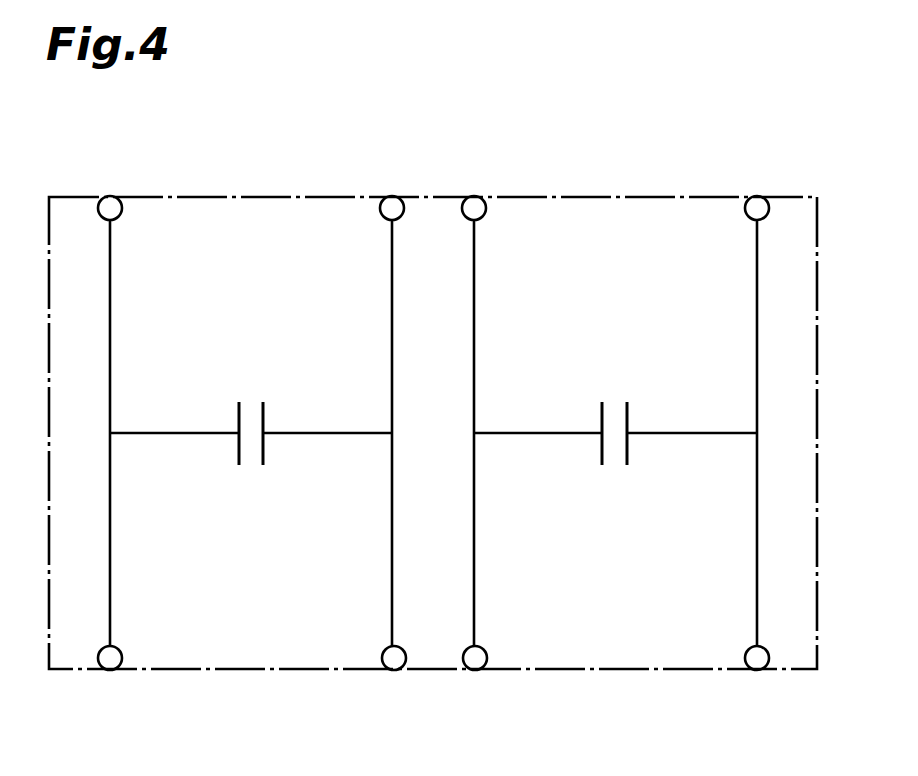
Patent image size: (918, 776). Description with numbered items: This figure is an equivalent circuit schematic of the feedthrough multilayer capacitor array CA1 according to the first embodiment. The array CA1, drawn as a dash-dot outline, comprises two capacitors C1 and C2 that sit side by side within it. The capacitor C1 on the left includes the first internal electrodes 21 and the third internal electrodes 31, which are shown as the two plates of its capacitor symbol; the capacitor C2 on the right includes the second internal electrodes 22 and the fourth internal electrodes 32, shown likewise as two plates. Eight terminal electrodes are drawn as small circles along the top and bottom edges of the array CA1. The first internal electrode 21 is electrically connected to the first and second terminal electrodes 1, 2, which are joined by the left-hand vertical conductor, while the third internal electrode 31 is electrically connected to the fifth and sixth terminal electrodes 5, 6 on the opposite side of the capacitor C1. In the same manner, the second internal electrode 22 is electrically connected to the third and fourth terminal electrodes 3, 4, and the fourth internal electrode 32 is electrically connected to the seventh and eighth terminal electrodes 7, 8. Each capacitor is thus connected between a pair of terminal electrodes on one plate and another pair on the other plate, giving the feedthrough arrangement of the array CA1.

The first terminal electrode 1 is at (110, 672).
The second terminal electrode 2 is at (110, 194).
The third terminal electrode 3 is at (475, 672).
The fourth terminal electrode 4 is at (474, 194).
The fifth terminal electrode 5 is at (394, 672).
The sixth terminal electrode 6 is at (392, 194).
The seventh terminal electrode 7 is at (757, 672).
The eighth terminal electrode 8 is at (757, 194).
The first internal electrode 21 is at (238, 416).
The third internal electrode 31 is at (264, 416).
The second internal electrode 22 is at (601, 416).
The fourth internal electrode 32 is at (628, 416).
The capacitor C1 is at (251, 431).
The capacitor C2 is at (614, 431).
The feedthrough multilayer capacitor array CA1 is at (262, 670).